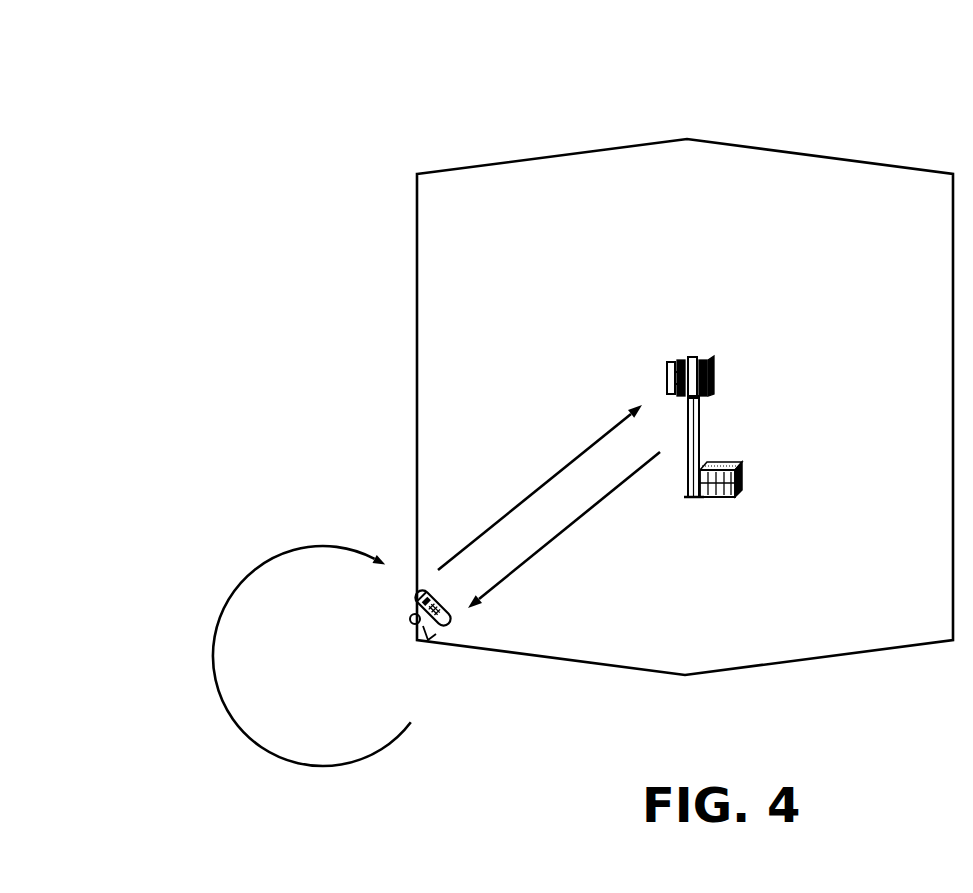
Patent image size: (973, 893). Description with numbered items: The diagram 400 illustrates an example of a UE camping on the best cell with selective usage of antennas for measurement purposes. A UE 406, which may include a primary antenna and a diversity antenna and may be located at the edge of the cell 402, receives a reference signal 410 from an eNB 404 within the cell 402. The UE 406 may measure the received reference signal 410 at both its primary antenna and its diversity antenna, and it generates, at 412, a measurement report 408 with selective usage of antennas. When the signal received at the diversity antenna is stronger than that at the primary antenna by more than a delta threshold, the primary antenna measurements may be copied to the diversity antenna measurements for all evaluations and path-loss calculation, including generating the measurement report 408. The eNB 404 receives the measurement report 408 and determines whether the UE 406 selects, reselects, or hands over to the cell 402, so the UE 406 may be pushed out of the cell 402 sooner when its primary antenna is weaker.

The diagram 400 is at (196, 51).
The cell 402 is at (879, 162).
The eNB 404 is at (694, 353).
The UE 406 is at (435, 643).
The measurement report 408 is at (540, 483).
The reference signal 410 is at (564, 530).
The generating the measurement report 412 is at (307, 544).